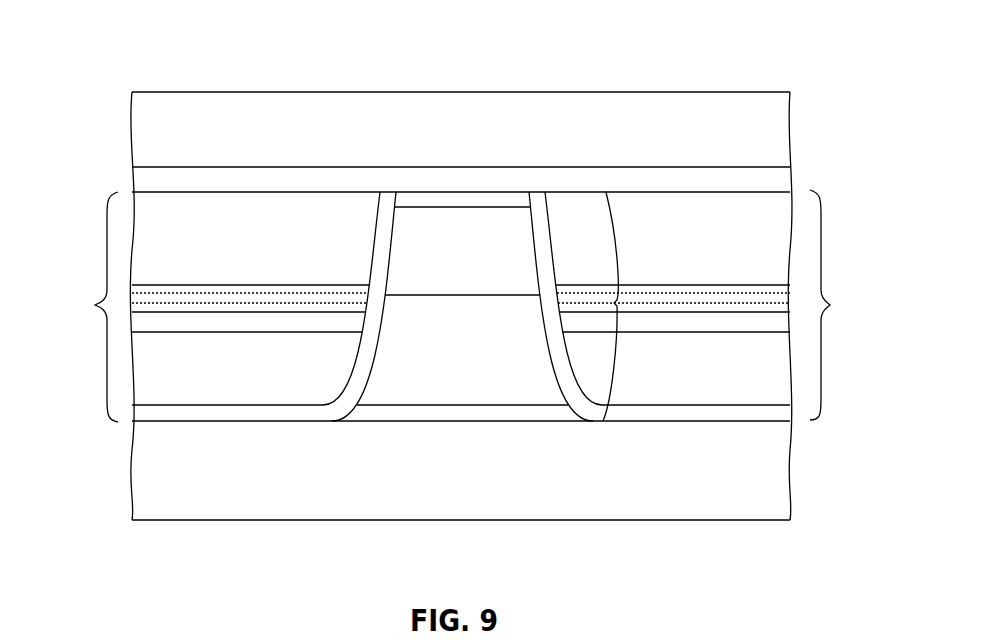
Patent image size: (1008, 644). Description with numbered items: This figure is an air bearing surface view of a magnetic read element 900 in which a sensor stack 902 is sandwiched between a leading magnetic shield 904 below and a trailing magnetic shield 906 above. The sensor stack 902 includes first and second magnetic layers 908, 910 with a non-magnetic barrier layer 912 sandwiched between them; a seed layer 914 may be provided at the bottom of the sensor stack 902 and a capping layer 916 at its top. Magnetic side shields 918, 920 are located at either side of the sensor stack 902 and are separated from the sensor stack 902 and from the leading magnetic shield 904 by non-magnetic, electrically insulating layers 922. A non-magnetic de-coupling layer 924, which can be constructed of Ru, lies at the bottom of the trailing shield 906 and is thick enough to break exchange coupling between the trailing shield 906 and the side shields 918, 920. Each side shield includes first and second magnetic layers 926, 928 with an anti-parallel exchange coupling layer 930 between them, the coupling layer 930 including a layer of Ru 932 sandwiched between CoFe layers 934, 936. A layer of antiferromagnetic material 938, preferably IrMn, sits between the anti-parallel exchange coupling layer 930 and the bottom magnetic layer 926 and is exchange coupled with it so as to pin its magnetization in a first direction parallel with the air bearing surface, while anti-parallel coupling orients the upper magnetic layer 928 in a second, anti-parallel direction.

The magnetic read element 900 is at (535, 92).
The sensor stack 902 is at (615, 200).
The leading magnetic shield 904 is at (505, 471).
The trailing magnetic shield 906 is at (535, 129).
The first magnetic layer 908 is at (508, 346).
The second magnetic layer 910 is at (503, 247).
The non-magnetic barrier layer 912 is at (462, 297).
The seed layer 914 is at (455, 405).
The capping layer 916 is at (440, 197).
The magnetic side shield 918 is at (824, 205).
The magnetic side shield 920 is at (110, 205).
The non-magnetic, electrically insulating layer 922 is at (218, 414).
The non-magnetic de-coupling layer 924 is at (645, 178).
The first magnetic layer 926 is at (281, 372).
The second magnetic layer 928 is at (273, 221).
The anti-parallel exchange coupling layer 930 is at (235, 285).
The layer of Ru 932 is at (132, 298).
The CoFe layer 934 is at (132, 305).
The CoFe layer 936 is at (132, 290).
The layer of antiferromagnetic material 938 is at (245, 319).